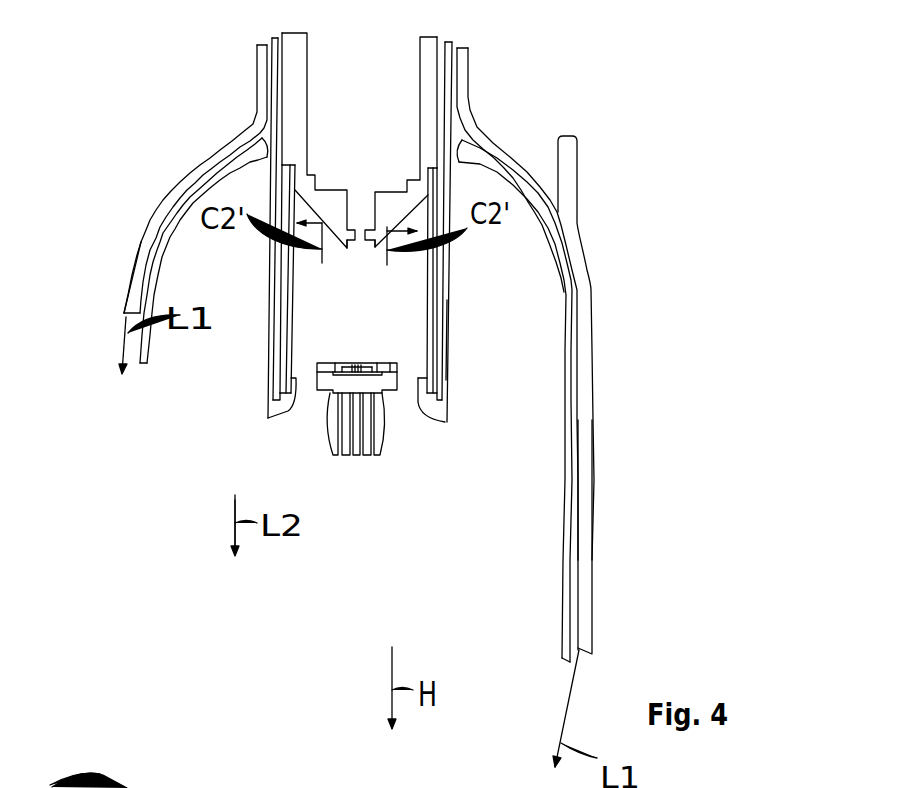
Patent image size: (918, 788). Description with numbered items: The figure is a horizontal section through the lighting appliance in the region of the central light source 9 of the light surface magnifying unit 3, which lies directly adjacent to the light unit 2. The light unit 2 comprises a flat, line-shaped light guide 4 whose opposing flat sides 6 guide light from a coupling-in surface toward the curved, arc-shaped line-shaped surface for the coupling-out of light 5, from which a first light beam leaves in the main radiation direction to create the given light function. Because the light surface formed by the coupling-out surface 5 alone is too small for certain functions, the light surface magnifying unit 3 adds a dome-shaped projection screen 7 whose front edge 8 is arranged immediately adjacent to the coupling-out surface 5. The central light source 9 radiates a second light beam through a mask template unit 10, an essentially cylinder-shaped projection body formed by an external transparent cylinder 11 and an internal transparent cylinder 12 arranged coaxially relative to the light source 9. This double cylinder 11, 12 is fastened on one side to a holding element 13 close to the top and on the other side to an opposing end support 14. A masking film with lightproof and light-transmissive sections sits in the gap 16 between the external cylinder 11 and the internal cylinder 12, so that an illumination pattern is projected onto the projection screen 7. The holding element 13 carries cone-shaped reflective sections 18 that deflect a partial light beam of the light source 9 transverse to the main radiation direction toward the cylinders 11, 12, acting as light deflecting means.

The light unit 2 is at (100, 318).
The light surface magnifying unit 3 is at (212, 507).
The line-shaped light guide 4 is at (128, 263).
The line-shaped surface for the coupling-out of light 5 is at (118, 372).
The flat sides 6 is at (577, 432).
The projection screen 7 is at (148, 327).
The front edge 8 is at (140, 363).
The central light source 9 is at (357, 367).
The mask template unit 10 is at (482, 340).
The external transparent cylinder 11 is at (450, 264).
The internal transparent cylinder 12 is at (440, 300).
The holding element 13 is at (420, 130).
The end support 14 is at (433, 408).
The gap 16 is at (276, 272).
The cone-shaped reflective sections 18 is at (340, 247).